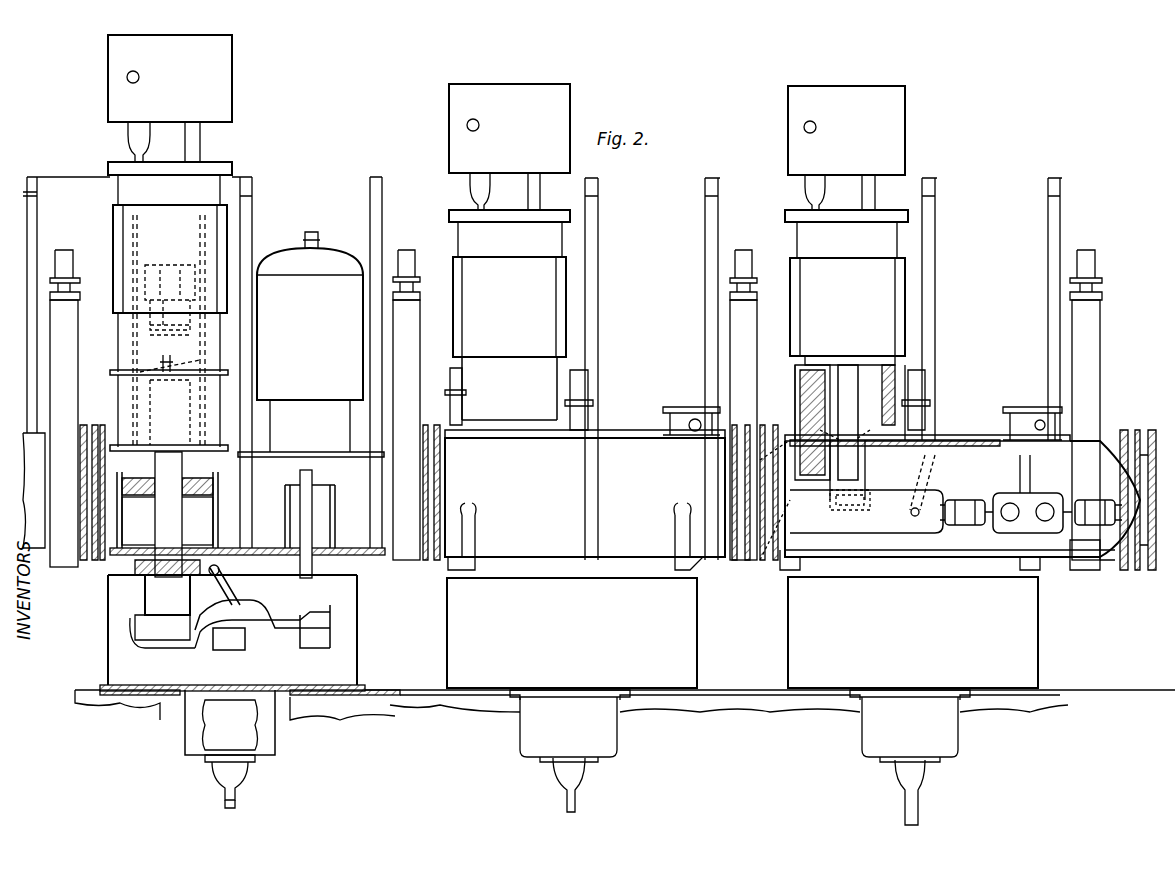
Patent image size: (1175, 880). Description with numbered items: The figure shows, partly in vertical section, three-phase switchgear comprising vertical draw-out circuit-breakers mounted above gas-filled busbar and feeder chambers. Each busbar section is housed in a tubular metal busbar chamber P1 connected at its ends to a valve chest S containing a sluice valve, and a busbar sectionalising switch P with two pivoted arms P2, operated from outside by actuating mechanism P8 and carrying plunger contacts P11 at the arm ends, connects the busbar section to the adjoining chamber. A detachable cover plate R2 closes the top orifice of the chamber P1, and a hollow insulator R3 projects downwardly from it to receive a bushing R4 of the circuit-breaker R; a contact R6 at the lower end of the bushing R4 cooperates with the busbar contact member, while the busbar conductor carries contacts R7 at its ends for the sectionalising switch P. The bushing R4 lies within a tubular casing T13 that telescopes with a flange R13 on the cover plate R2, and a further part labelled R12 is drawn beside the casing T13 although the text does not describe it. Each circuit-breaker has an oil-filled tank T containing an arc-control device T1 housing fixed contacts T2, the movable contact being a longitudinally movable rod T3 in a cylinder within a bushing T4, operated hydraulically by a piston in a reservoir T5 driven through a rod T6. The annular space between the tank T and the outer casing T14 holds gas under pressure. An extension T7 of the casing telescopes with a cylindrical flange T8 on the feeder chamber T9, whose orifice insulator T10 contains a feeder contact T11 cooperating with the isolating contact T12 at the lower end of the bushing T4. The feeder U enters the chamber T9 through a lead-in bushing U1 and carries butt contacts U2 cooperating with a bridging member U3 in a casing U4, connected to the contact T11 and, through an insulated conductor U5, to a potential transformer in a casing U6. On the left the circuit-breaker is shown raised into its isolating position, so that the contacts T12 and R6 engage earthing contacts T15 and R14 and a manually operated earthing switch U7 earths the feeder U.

The circuit-breaker tank T is at (205, 344).
The arc-control device T1 is at (150, 329).
The fixed circuit-breaker contacts T2 is at (150, 278).
The longitudinally movable rod T3 is at (140, 380).
The bushing T4 is at (178, 516).
The reservoir T5 is at (115, 107).
The rod T6 is at (127, 77).
The extension T7 is at (215, 480).
The cylindrical flange T8 is at (122, 517).
The feeder chamber T9 is at (108, 606).
The orifice insulator T10 is at (140, 617).
The feeder contact T11 is at (130, 630).
The isolating contact T12 is at (167, 595).
The tubular casing T13 is at (905, 345).
The outer casing T14 is at (150, 237).
The earthing contact T15 is at (135, 570).
The circuit-breaker R is at (140, 355).
The cover plate R2 is at (935, 440).
The hollow insulator R3 is at (870, 468).
The bushing R4 is at (810, 375).
The contact R6 is at (836, 520).
The contacts R7 is at (920, 520).
The pin R12 is at (588, 385).
The flange R13 is at (905, 370).
The earthing contact R14 is at (815, 395).
The valve chest S is at (62, 314).
The busbar sectionalising switch P is at (1008, 493).
The busbar chamber P1 is at (1060, 585).
The pivoted arms P2 is at (972, 494).
The actuating mechanism P8 is at (690, 418).
The plunger contacts P11 is at (1135, 440).
The feeder U is at (238, 802).
The lead-in bushing U1 is at (235, 730).
The butt contacts U2 is at (240, 640).
The bridging member U3 is at (282, 640).
The casing U4 is at (332, 650).
The insulated conductor U5 is at (312, 590).
The casing U6 is at (311, 344).
The earthing switch U7 is at (236, 600).